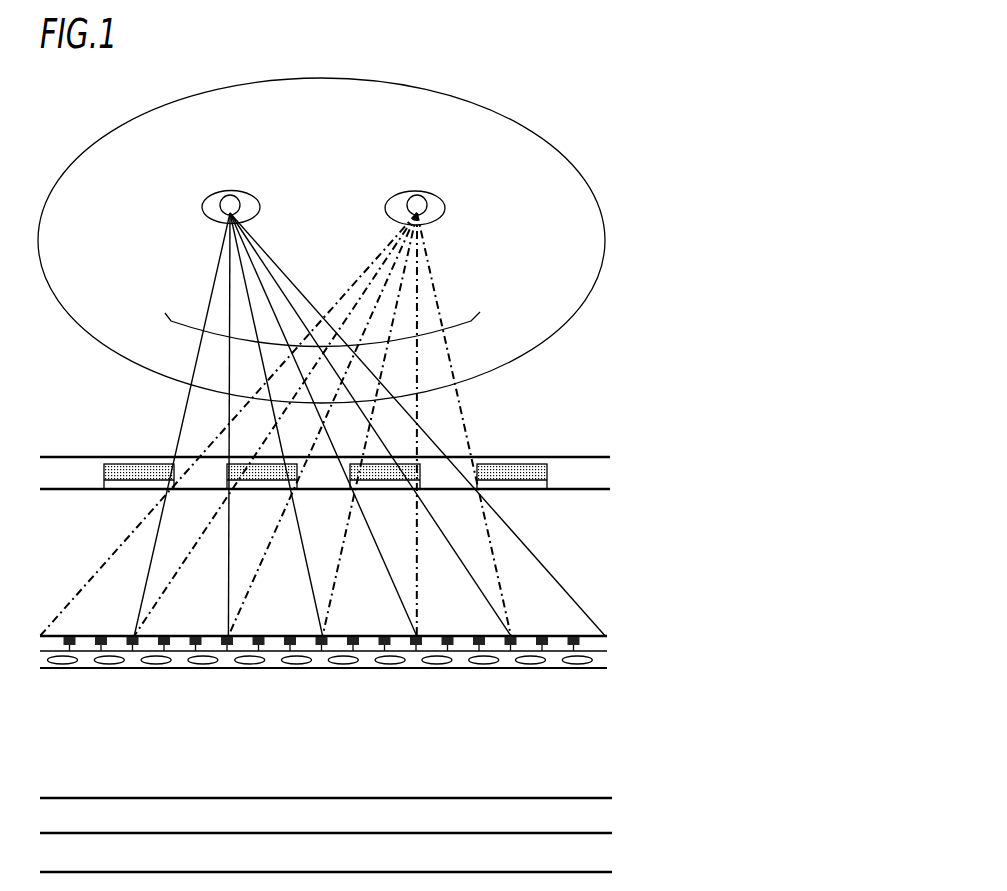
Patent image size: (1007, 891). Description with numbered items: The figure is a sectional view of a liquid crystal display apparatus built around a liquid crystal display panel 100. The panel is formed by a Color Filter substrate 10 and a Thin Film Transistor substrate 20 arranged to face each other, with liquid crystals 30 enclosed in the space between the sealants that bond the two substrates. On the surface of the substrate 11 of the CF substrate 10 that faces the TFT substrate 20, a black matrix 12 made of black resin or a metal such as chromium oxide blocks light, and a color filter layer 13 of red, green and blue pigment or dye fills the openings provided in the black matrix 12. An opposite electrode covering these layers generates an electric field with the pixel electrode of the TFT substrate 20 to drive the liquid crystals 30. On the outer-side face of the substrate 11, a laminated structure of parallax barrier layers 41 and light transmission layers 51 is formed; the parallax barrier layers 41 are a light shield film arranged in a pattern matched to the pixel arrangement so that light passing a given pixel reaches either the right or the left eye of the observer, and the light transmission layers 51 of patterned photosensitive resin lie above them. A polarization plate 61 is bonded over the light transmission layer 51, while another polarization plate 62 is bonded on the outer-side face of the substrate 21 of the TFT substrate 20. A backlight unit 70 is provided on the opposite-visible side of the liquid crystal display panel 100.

The liquid crystal display panel 100 is at (440, 643).
The Color Filter (CF) substrate 10 is at (399, 589).
The substrate 11 is at (605, 560).
The black matrix (BM) 12 is at (605, 636).
The color filter layer 13 is at (372, 632).
The Thin Film Transistor (TFT) substrate 20 is at (682, 735).
The substrate 21 is at (605, 715).
The liquid crystals 30 is at (605, 658).
The parallax barrier layers 41 is at (378, 439).
The light transmission layers 51 is at (527, 465).
The polarization plate 61 is at (605, 477).
The polarization plate 62 is at (605, 815).
The backlight unit 70 is at (605, 850).